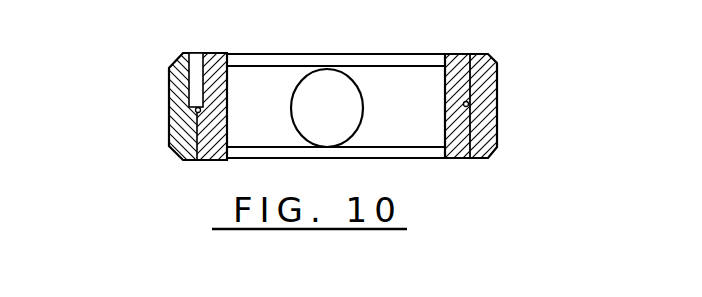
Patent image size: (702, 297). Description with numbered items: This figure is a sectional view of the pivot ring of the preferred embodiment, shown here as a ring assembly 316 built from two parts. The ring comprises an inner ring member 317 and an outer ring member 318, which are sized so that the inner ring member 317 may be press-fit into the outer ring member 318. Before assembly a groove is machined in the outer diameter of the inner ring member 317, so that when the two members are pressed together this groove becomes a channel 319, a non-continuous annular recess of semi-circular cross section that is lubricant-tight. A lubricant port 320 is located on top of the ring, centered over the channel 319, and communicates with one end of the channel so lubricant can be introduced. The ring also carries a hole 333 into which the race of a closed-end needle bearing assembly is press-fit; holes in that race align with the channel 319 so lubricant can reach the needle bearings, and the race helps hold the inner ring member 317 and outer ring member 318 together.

The tubular housing 316 is at (228, 60).
The inner ring member 317 is at (462, 70).
The outer ring member 318 is at (169, 98).
The channel 319 is at (468, 103).
The lubricant port 320 is at (174, 70).
The hole 333 is at (340, 90).